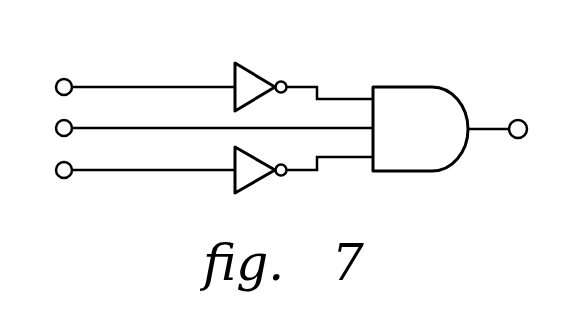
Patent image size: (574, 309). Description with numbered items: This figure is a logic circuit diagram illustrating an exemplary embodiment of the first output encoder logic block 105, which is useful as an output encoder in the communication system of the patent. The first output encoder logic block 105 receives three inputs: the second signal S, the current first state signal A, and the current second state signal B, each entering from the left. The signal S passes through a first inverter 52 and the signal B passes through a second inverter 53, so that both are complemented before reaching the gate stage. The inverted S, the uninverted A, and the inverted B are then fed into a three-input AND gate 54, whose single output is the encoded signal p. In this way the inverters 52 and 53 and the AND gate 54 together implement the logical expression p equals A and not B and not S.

The first output encoder logic block 105 is at (198, 48).
The inverter 52 is at (262, 65).
The inverter 53 is at (263, 186).
The AND gate 54 is at (413, 87).